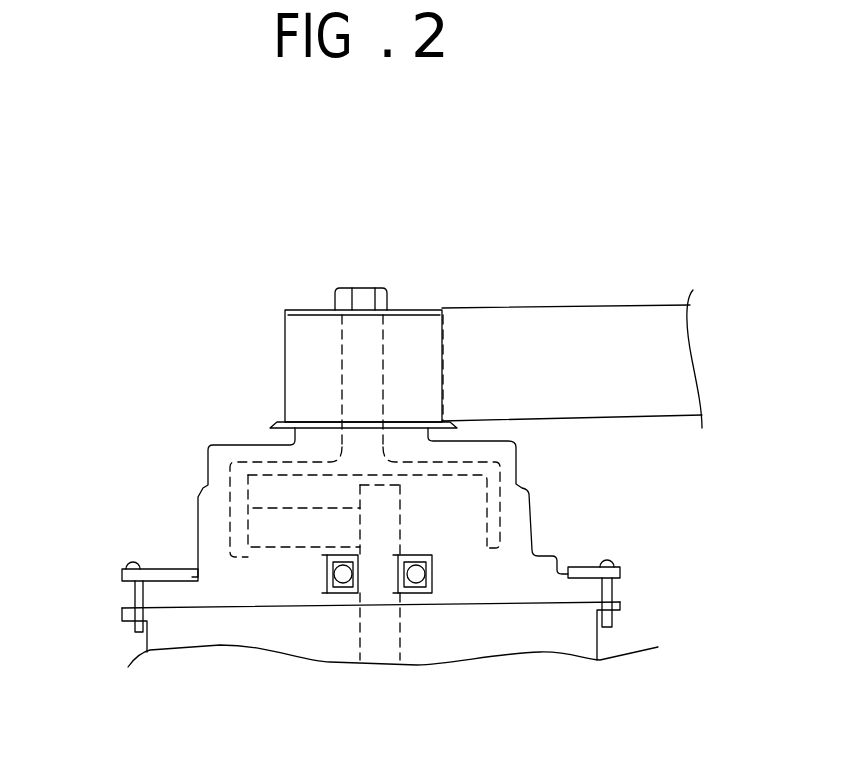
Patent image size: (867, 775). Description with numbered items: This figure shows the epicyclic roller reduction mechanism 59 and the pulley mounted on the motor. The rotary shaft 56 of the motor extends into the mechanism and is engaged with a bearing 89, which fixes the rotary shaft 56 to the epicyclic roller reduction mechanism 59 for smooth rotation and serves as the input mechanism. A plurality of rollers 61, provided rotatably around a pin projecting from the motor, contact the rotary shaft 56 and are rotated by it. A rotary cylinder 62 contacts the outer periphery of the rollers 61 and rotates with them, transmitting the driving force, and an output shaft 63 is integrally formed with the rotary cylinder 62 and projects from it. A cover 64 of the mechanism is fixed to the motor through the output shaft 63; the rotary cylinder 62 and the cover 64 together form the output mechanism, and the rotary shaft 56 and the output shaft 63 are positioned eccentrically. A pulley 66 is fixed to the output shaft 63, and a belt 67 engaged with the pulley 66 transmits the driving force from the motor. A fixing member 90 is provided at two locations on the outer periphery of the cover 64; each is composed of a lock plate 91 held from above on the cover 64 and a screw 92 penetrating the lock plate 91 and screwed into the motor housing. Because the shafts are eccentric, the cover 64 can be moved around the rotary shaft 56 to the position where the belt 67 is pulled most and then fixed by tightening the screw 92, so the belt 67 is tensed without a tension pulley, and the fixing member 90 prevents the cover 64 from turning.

The rotary shaft 56 is at (383, 650).
The epicyclic roller reduction mechanism 59 is at (553, 488).
The rollers 61 is at (280, 548).
The rotary cylinder 62 is at (257, 455).
The output shaft 63 is at (387, 367).
The cover 64 is at (208, 465).
The pulley 66 is at (450, 377).
The belt 67 is at (610, 308).
The bearing 89 is at (417, 593).
The fixing member 90 is at (98, 575).
The lock plate 91 is at (168, 570).
The screw 92 is at (132, 596).